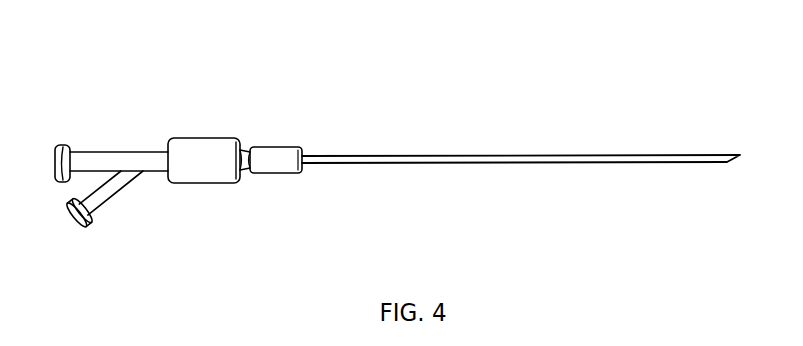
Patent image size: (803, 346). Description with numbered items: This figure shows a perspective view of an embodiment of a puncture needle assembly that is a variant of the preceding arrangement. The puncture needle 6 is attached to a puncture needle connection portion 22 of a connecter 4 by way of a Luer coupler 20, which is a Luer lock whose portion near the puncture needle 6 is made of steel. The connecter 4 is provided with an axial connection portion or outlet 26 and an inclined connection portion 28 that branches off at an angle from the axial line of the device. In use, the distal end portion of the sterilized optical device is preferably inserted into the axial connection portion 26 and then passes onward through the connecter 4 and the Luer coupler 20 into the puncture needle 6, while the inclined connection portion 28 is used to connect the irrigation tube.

The connecter 4 is at (200, 153).
The puncture needle 6 is at (477, 156).
The Luer coupler 20 is at (293, 148).
The puncture needle connection portion 22 is at (241, 151).
The axial connection portion 26 is at (91, 157).
The inclined connection portion 28 is at (101, 196).